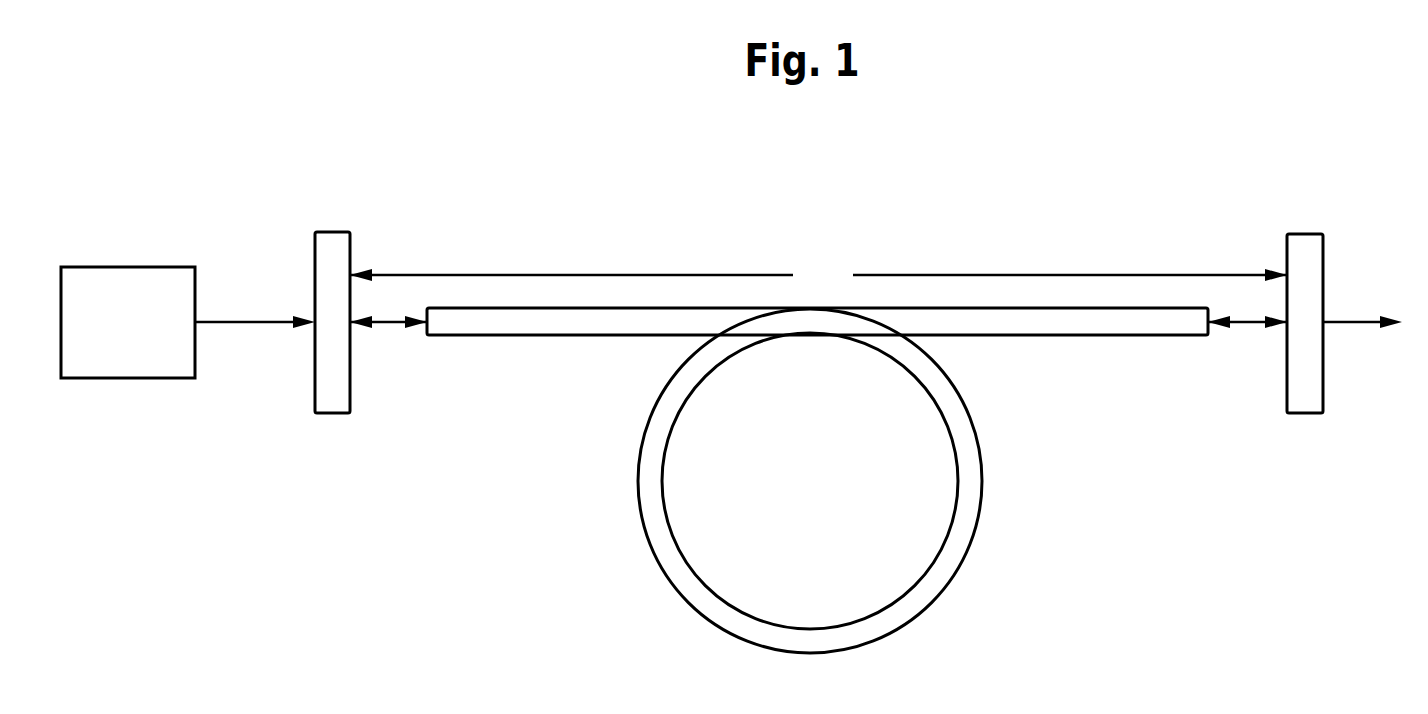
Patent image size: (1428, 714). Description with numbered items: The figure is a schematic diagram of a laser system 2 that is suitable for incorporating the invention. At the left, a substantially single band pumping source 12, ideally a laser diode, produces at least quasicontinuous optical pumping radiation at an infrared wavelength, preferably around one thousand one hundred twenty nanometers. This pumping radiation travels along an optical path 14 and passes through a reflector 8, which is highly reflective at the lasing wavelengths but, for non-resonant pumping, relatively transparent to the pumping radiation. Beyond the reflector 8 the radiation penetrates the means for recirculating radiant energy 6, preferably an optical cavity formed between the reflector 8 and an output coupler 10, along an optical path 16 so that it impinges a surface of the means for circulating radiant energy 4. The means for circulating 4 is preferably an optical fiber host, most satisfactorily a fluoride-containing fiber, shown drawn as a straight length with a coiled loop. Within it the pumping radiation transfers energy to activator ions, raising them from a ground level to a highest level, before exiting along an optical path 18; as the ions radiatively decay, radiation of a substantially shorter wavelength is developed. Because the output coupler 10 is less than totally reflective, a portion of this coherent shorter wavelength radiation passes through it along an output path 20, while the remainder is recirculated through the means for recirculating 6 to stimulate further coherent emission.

The laser system 2 is at (1092, 210).
The means for circulating radiant energy 4 is at (717, 608).
The means for recirculating radiant energy 6 is at (818, 299).
The reflector 8 is at (330, 242).
The output coupler 10 is at (1307, 250).
The pumping source 12 is at (142, 283).
The optical path 14 is at (238, 322).
The optical path 16 is at (393, 322).
The optical path 18 is at (1247, 327).
The output path 20 is at (1352, 327).